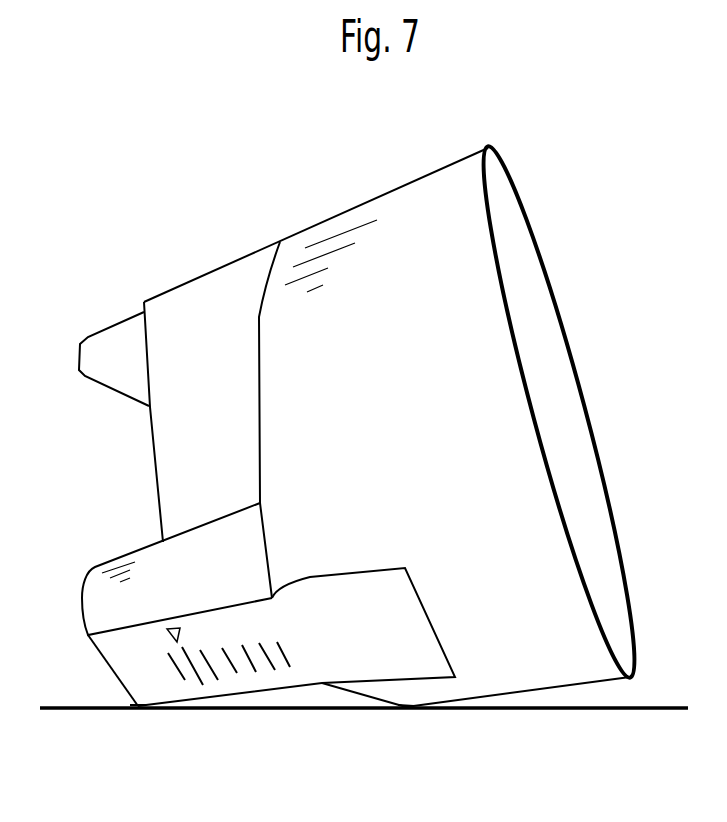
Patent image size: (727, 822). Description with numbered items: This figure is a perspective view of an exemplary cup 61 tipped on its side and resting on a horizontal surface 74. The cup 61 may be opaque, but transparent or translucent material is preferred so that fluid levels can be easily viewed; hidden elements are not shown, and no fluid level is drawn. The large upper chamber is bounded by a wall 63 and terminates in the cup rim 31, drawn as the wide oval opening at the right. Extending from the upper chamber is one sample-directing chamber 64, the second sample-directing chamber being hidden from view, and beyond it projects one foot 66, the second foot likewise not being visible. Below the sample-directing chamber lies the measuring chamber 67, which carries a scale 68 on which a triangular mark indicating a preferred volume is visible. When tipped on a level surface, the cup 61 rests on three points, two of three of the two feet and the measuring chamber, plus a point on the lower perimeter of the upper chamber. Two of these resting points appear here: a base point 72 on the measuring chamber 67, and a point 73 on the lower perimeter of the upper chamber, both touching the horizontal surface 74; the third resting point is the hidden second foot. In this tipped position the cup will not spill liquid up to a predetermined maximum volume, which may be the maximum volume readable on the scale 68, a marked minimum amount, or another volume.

The cup 61 is at (139, 165).
The cup rim 31 is at (525, 211).
The wall of the upper chamber 63 is at (465, 355).
The sample-directing chamber 64 is at (190, 420).
The foot 66 is at (110, 348).
The measuring chamber 67 is at (110, 605).
The scale 68 is at (222, 663).
The base point on the measuring chamber 72 is at (138, 708).
The point on the lower perimeter of the upper chamber 73 is at (406, 709).
The horizontal surface 74 is at (567, 709).